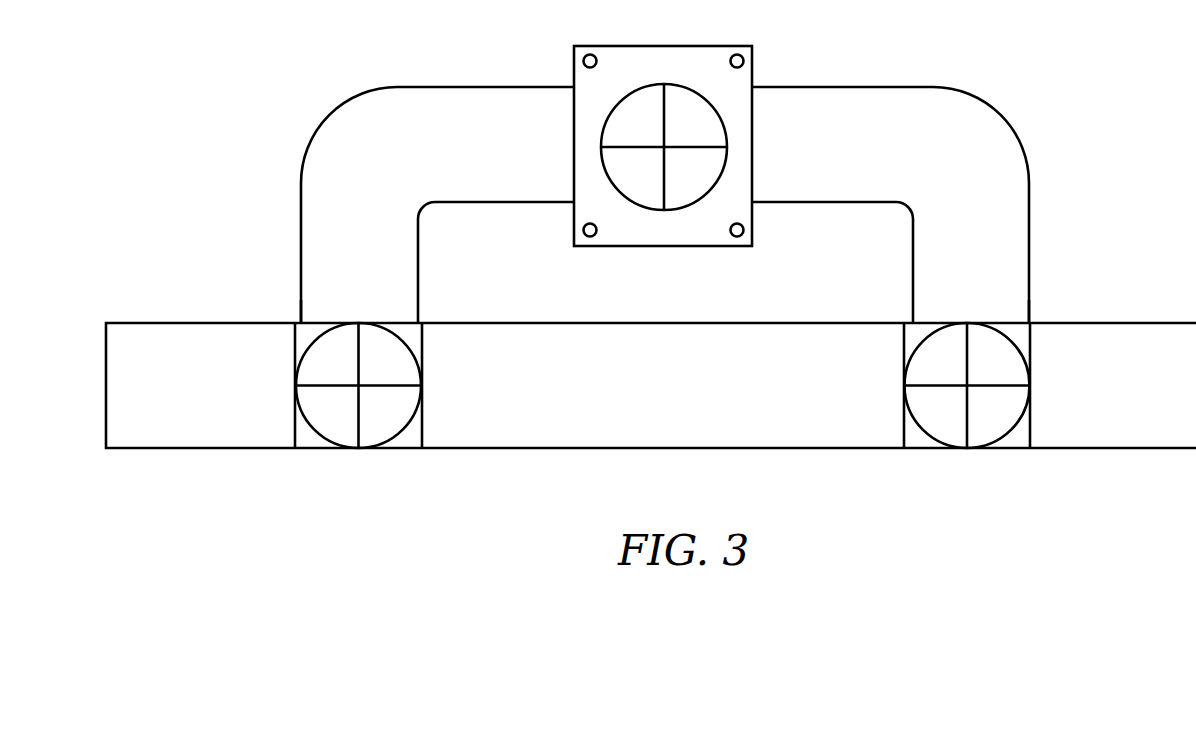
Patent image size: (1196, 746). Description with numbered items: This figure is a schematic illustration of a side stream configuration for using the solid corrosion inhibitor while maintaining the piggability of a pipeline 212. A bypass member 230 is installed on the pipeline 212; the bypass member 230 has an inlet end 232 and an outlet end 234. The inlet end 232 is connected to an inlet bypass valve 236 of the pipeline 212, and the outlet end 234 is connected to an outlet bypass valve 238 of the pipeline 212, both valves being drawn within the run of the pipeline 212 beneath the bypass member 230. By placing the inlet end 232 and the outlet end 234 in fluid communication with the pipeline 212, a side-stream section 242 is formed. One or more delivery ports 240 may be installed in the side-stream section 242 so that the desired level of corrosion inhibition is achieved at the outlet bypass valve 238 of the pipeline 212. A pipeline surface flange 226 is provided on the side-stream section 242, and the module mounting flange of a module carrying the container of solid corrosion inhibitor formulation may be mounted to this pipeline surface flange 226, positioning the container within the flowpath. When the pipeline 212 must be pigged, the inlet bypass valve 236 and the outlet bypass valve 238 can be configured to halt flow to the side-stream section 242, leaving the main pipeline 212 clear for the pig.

The pipeline 212 is at (1100, 323).
The pipeline surface flange 226 is at (574, 75).
The bypass member 230 is at (987, 107).
The inlet end 232 is at (298, 320).
The outlet end 234 is at (1033, 318).
The inlet bypass valve 236 is at (310, 432).
The outlet bypass valve 238 is at (923, 432).
The delivery port 240 is at (695, 93).
The side-stream section 242 is at (397, 85).